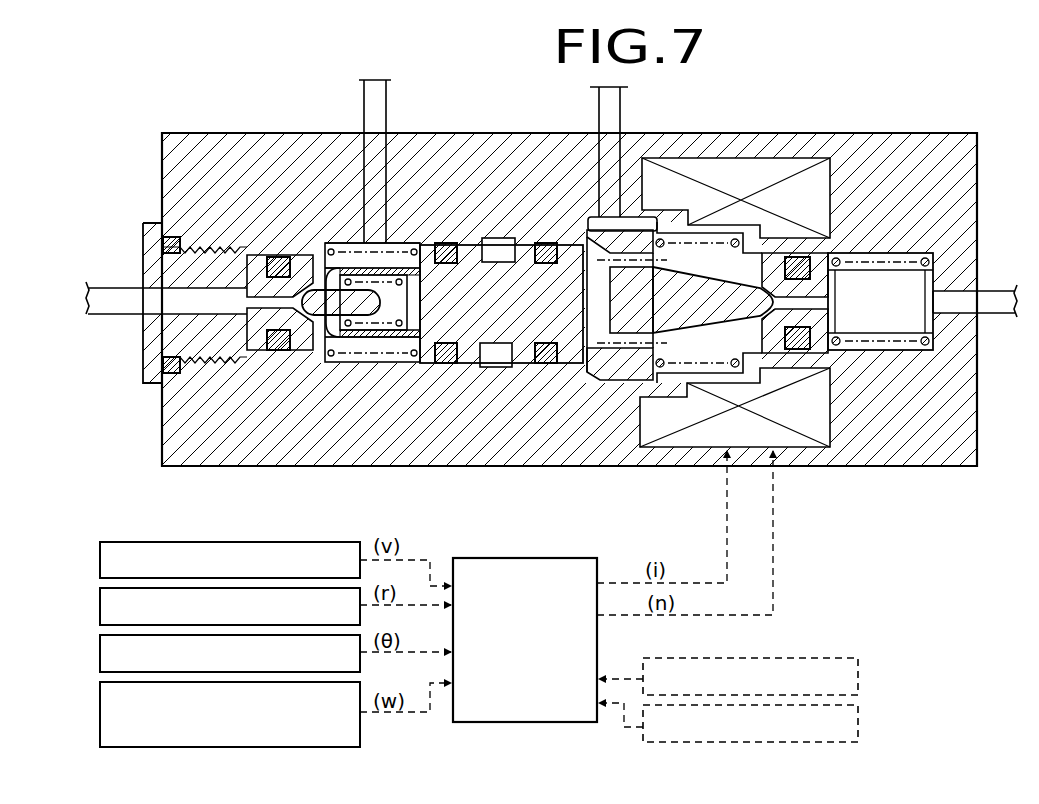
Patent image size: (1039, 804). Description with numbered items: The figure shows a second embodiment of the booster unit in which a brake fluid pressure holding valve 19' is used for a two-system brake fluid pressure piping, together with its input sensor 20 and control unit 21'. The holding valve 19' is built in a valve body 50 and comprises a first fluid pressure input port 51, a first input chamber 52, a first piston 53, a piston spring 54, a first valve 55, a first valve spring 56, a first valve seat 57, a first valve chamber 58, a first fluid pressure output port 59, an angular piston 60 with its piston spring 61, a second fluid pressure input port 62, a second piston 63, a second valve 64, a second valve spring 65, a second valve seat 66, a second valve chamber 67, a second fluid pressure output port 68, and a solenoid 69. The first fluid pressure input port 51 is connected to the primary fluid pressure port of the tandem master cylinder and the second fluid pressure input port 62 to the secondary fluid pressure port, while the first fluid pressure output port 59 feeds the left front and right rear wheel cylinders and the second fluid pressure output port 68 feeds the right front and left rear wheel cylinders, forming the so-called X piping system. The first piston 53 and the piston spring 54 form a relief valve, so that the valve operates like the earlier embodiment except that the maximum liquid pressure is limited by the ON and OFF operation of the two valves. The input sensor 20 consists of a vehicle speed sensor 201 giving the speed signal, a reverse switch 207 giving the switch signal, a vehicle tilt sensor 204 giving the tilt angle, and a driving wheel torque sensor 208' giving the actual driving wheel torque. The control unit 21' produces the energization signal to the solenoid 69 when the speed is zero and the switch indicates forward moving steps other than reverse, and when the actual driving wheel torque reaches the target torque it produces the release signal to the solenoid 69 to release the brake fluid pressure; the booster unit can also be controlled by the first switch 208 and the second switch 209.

The brake fluid pressure holding valve 19' is at (187, 46).
The input sensor 20 is at (118, 516).
The control unit 21' is at (527, 620).
The valve body 50 is at (887, 133).
The first fluid pressure input port 51 is at (963, 291).
The first input chamber 52 is at (927, 320).
The first piston 53 is at (828, 352).
The piston spring 54 is at (915, 348).
The first valve 55 is at (608, 352).
The first valve spring 56 is at (668, 372).
The first valve seat 57 is at (767, 283).
The first valve chamber 58 is at (688, 263).
The first fluid pressure output port 59 is at (590, 218).
The angular piston 60 is at (498, 350).
The piston spring 61 is at (345, 357).
The second fluid pressure input port 62 is at (152, 313).
The second piston 63 is at (262, 257).
The second valve 64 is at (325, 312).
The second valve spring 65 is at (386, 325).
The second valve seat 66 is at (322, 266).
The second valve chamber 67 is at (392, 250).
The second fluid pressure output port 68 is at (361, 150).
The solenoid 69 is at (802, 465).
The vehicle speed sensor 201 is at (100, 560).
The reverse switch 207 is at (100, 606).
The vehicle tilt sensor 204 is at (100, 653).
The driving wheel torque sensor 208' is at (204, 714).
The first switch 208 is at (775, 658).
The second switch 209 is at (858, 727).